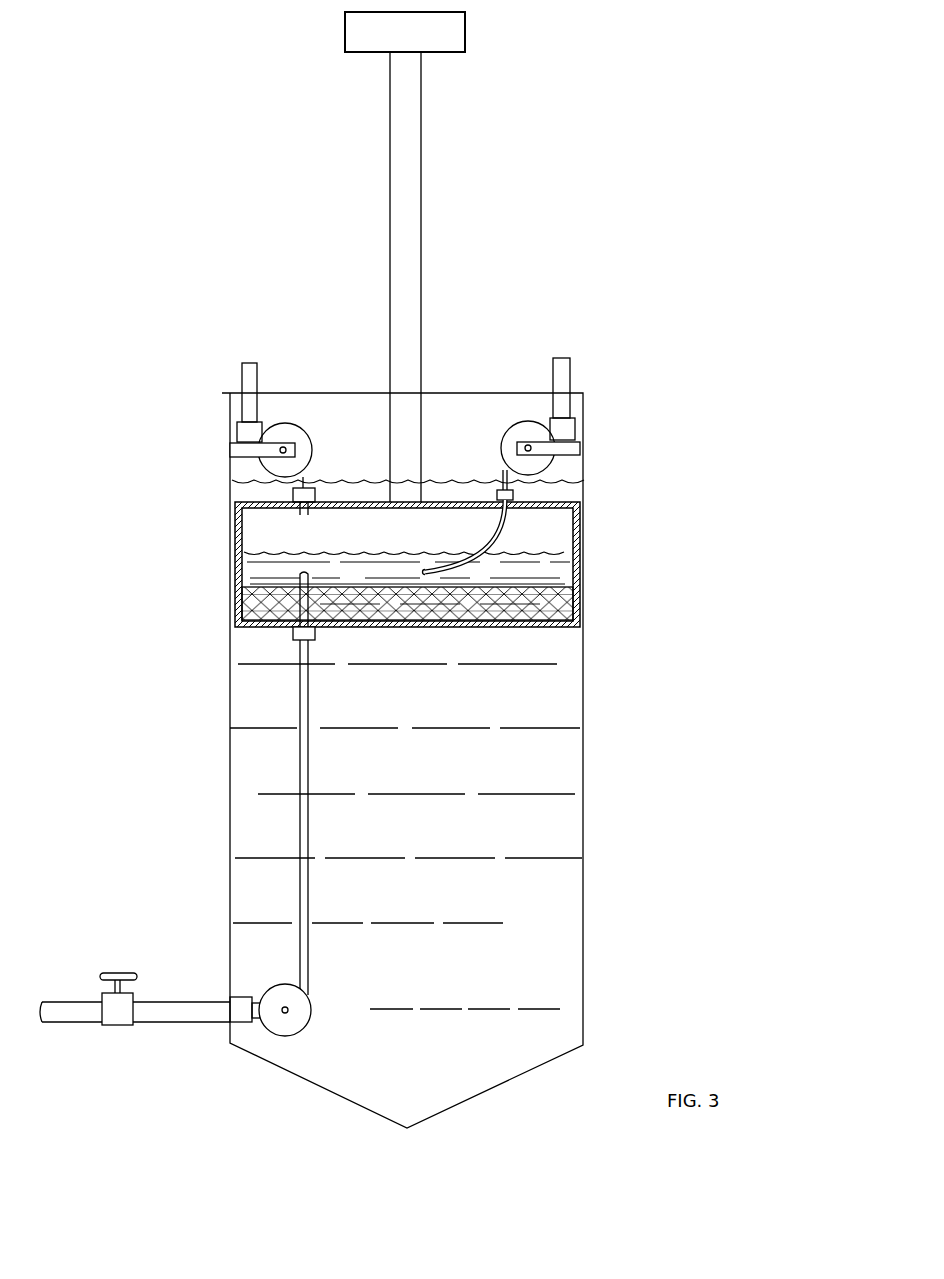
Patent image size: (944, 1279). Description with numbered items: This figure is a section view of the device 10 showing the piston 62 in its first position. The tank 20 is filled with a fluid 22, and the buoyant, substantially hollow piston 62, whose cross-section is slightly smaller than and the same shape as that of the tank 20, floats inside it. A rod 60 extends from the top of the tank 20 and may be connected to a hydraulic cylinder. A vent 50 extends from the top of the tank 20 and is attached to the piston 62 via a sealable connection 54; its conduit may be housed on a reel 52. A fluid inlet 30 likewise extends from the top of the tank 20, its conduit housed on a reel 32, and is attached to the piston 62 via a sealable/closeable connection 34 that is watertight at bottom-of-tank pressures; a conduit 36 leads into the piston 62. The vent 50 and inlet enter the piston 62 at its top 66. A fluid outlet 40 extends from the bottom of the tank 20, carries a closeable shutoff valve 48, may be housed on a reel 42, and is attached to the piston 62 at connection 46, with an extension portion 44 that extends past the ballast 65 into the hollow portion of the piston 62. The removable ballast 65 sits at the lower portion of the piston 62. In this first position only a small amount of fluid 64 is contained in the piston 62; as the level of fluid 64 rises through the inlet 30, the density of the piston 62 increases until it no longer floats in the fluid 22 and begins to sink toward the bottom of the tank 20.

The device 10 is at (148, 257).
The tank 20 is at (585, 840).
The fluid 22 is at (500, 883).
The fluid inlet 30 is at (568, 367).
The reel 32 is at (575, 445).
The sealable/closeable connection 34 is at (500, 548).
The tube 36 is at (508, 479).
The fluid outlet 40 is at (192, 1008).
The reel 42 is at (275, 1027).
The extension portion 44 is at (300, 612).
The connection 46 is at (294, 636).
The shutoff valve 48 is at (110, 1008).
The vent 50 is at (243, 378).
The reel 52 is at (240, 447).
The sealable connection 54 is at (294, 510).
The rod 60 is at (410, 163).
The piston 62 is at (575, 504).
The fluid 64 is at (568, 574).
The ballast 65 is at (542, 624).
The top 66 is at (570, 606).